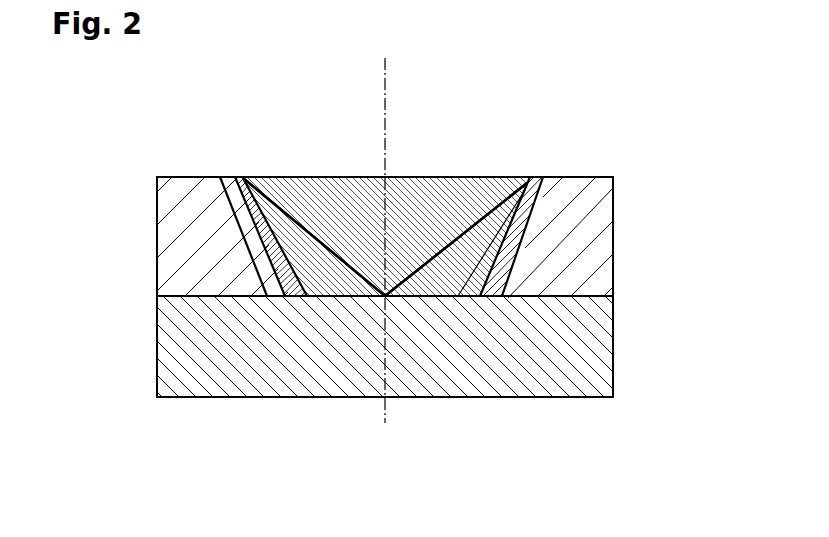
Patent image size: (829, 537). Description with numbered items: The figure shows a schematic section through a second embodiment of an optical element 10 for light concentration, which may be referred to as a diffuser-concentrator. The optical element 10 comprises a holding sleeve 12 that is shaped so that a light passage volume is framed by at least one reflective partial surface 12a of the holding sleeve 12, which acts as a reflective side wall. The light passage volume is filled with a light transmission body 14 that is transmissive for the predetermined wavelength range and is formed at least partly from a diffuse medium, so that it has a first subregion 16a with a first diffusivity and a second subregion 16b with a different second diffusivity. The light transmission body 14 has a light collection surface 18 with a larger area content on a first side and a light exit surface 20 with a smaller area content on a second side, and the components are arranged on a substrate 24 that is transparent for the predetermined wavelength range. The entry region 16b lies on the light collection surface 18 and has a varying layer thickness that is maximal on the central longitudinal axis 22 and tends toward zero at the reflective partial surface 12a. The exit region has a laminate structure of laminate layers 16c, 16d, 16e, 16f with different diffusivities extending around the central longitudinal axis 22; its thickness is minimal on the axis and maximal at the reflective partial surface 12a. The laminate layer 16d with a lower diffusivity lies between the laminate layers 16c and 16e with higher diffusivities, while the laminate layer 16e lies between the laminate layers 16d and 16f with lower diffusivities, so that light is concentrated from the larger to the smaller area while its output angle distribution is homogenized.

The optical element 10 is at (450, 287).
The holding sleeve 12 is at (595, 202).
The reflective partial surface 12a is at (245, 177).
The light transmission body 14 is at (437, 165).
The first subregion 16a is at (518, 264).
The entry region 16b is at (473, 207).
The laminate layer 16c is at (331, 288).
The laminate layer 16d is at (283, 270).
The laminate layer 16e is at (486, 280).
The laminate layer 16f is at (261, 278).
The light collection surface 18 is at (330, 163).
The light exit surface 20 is at (424, 305).
The central longitudinal axis 22 is at (384, 72).
The substrate 24 is at (595, 354).